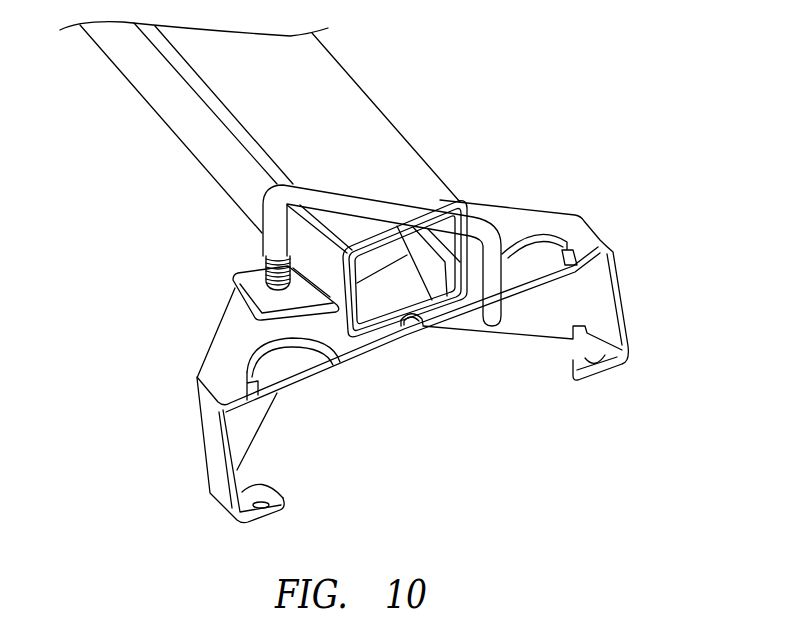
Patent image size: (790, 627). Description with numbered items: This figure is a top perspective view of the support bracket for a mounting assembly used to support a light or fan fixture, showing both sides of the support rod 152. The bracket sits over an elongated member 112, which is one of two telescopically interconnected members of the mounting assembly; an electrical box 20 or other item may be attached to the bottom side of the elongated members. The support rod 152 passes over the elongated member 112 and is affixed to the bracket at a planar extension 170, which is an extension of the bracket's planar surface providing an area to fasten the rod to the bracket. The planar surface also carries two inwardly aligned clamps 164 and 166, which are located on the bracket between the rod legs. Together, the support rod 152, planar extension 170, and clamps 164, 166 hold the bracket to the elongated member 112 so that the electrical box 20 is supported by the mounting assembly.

The elongated member 112 is at (367, 125).
The support rod 152 is at (272, 220).
The planar extension 170 is at (268, 303).
The electrical box 20 is at (308, 360).
The clamp 164 is at (400, 335).
The clamp 166 is at (447, 330).